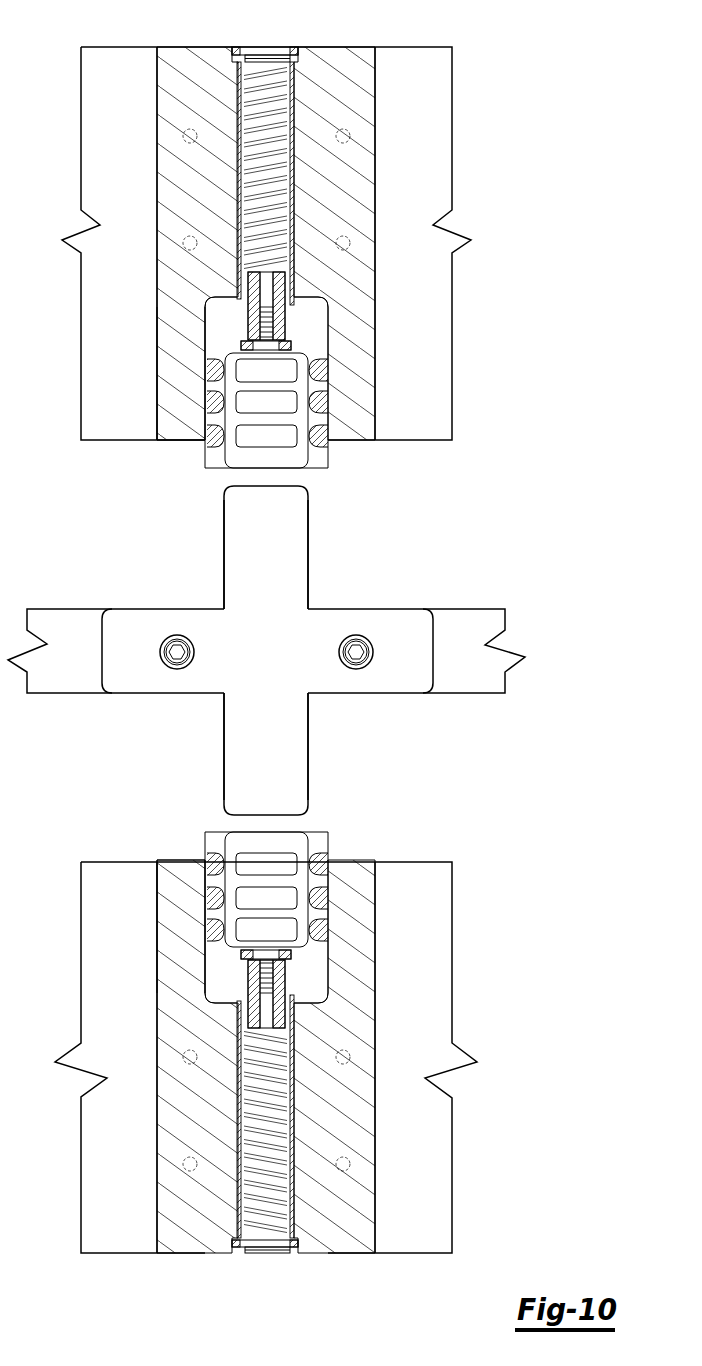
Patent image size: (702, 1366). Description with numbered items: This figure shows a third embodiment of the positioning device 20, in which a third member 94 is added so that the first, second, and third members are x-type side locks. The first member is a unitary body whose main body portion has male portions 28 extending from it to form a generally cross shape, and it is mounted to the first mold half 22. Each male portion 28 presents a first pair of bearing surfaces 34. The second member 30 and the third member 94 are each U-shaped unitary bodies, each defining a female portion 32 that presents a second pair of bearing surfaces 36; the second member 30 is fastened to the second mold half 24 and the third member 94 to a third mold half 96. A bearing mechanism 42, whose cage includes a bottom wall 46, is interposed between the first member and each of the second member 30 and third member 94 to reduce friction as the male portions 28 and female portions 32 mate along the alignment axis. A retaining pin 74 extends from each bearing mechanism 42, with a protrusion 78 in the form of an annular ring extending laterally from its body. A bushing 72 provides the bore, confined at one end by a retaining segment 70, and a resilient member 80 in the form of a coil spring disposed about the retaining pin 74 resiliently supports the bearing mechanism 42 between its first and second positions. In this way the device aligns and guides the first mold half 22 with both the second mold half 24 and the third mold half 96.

The positioning device 20 is at (271, 645).
The first mold half 22 is at (440, 132).
The second mold half 24 is at (460, 618).
The male portion 28 is at (224, 512).
The second member 30 is at (171, 62).
The female portion 32 is at (165, 367).
The first pair of bearing surfaces 34 is at (224, 548).
The second pair of bearing surfaces 36 is at (223, 318).
The bearing mechanism 42 is at (197, 453).
The bottom wall 46 is at (320, 350).
The retaining segment 70 is at (268, 50).
The bushing 72 is at (245, 1130).
The retaining pin 74 is at (283, 307).
The protrusion 78 is at (247, 293).
The resilient member 80 is at (285, 1130).
The third member 94 is at (352, 872).
The third mold half 96 is at (440, 897).